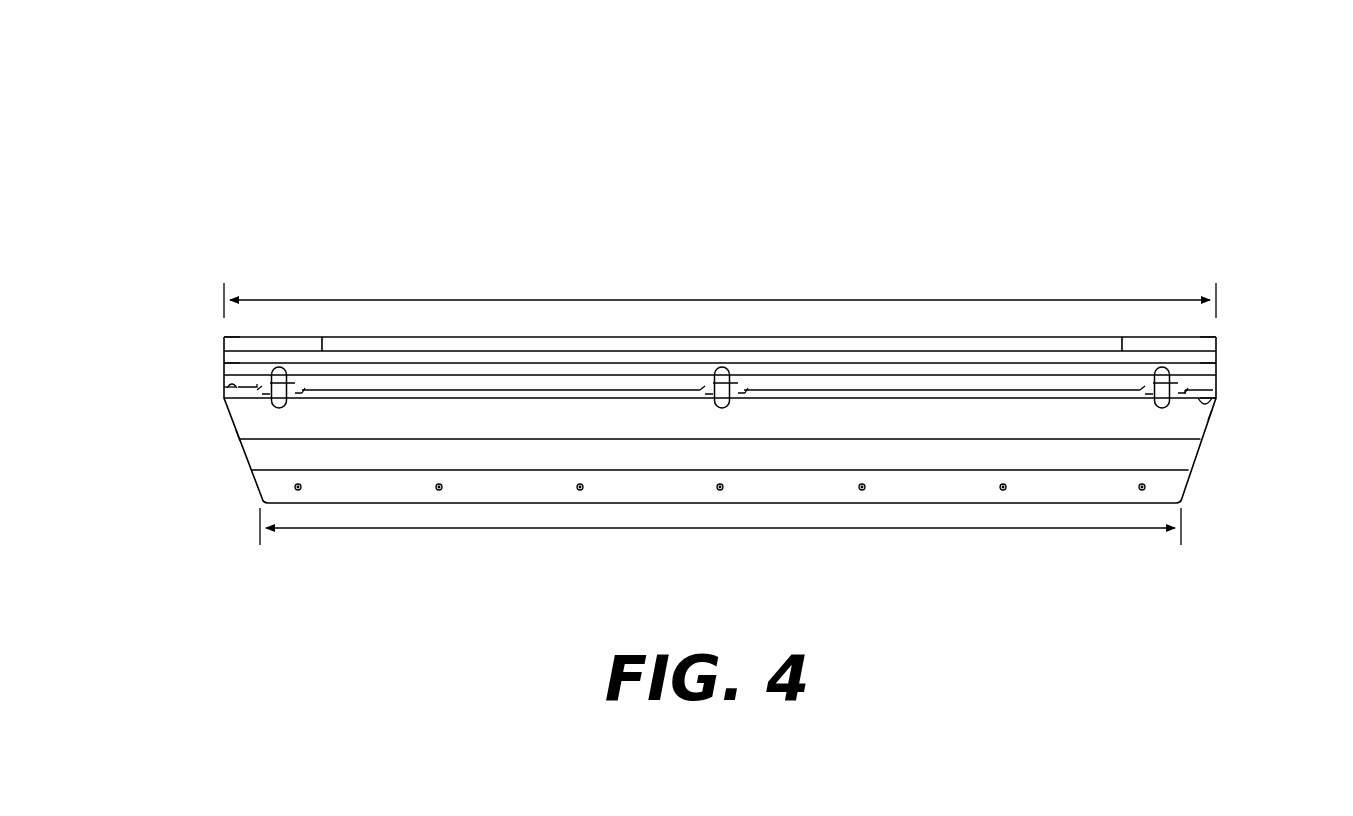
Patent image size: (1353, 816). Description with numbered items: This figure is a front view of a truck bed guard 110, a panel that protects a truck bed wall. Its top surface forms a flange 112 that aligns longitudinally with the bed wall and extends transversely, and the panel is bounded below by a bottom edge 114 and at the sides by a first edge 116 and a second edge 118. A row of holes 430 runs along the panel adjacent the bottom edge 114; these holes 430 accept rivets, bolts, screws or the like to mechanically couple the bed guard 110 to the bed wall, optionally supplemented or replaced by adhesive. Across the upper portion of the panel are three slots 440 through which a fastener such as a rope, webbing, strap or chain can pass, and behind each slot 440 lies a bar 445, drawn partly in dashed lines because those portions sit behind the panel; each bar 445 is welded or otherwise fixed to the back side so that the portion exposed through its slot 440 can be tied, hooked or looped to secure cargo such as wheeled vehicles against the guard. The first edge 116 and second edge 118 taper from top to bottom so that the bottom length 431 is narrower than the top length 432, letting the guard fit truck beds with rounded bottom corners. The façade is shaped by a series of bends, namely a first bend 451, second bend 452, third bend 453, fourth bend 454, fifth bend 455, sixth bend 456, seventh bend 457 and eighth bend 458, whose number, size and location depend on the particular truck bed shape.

The bed guard 110 is at (263, 156).
The flange 112 is at (493, 337).
The bottom edge 114 is at (492, 504).
The first edge 116 is at (255, 487).
The second edge 118 is at (1198, 487).
The holes 430 is at (580, 492).
The bottom length 431 is at (852, 530).
The top length 432 is at (945, 298).
The slots 440 is at (279, 366).
The bar 445 is at (283, 406).
The first bend 451 is at (236, 334).
The second bend 452 is at (1212, 346).
The third bend 453 is at (232, 363).
The fourth bend 454 is at (1216, 371).
The fifth bend 455 is at (230, 386).
The sixth bend 456 is at (1201, 406).
The seventh bend 457 is at (242, 441).
The eighth bend 458 is at (1194, 457).